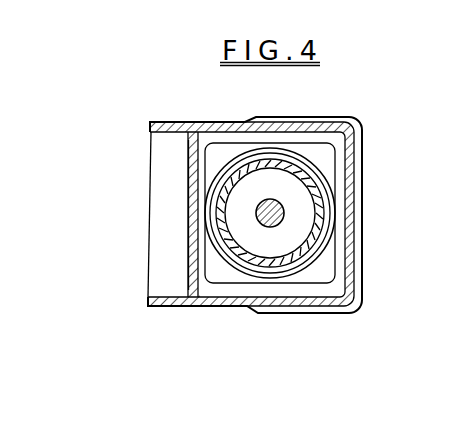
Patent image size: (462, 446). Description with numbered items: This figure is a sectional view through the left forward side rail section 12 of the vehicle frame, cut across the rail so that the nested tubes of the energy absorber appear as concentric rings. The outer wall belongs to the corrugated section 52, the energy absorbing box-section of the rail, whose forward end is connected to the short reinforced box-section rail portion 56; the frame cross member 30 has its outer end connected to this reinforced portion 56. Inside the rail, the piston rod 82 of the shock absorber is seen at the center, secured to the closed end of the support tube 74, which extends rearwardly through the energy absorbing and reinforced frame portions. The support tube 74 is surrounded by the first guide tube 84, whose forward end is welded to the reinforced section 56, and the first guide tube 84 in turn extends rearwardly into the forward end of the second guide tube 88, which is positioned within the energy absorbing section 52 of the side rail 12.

The left forward side rail section 12 is at (224, 311).
The frame cross member 30 is at (183, 121).
The corrugated section 52 is at (361, 287).
The reinforced box-section rail portion 56 is at (187, 258).
The support tube 74 is at (313, 208).
The piston rod 82 is at (283, 222).
The first guide tube 84 is at (312, 178).
The second guide tube 88 is at (296, 161).